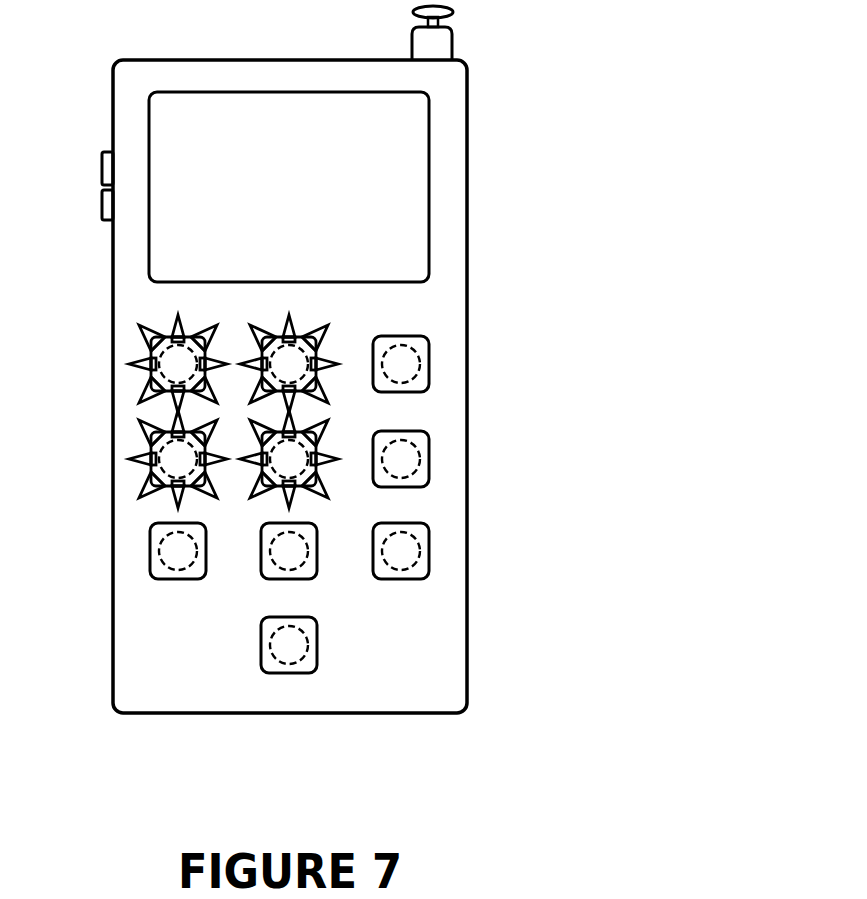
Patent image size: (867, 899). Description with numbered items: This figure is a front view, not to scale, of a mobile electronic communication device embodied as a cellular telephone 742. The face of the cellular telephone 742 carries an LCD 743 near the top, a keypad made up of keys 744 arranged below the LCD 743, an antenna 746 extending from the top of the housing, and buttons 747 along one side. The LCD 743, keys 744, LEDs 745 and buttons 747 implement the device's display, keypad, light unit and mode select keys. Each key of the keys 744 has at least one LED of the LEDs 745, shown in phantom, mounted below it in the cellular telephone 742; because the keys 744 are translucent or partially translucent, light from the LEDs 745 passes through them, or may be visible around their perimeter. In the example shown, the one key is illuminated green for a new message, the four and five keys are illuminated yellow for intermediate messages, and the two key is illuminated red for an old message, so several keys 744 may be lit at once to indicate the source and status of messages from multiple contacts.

The cellular telephone 742 is at (467, 170).
The LCD 743 is at (429, 250).
The keys 744 is at (137, 350).
The LEDs 745 is at (150, 473).
The antenna 746 is at (452, 42).
The buttons 747 is at (102, 160).